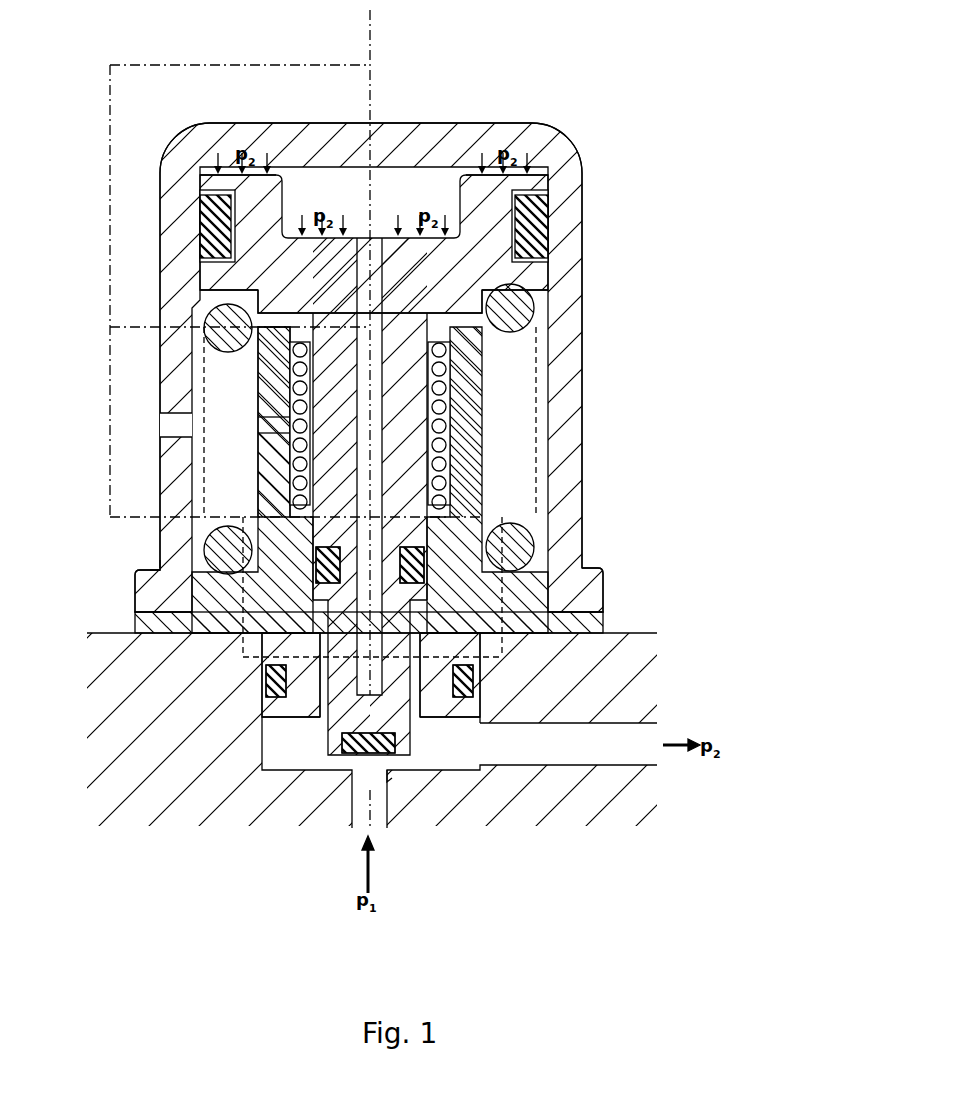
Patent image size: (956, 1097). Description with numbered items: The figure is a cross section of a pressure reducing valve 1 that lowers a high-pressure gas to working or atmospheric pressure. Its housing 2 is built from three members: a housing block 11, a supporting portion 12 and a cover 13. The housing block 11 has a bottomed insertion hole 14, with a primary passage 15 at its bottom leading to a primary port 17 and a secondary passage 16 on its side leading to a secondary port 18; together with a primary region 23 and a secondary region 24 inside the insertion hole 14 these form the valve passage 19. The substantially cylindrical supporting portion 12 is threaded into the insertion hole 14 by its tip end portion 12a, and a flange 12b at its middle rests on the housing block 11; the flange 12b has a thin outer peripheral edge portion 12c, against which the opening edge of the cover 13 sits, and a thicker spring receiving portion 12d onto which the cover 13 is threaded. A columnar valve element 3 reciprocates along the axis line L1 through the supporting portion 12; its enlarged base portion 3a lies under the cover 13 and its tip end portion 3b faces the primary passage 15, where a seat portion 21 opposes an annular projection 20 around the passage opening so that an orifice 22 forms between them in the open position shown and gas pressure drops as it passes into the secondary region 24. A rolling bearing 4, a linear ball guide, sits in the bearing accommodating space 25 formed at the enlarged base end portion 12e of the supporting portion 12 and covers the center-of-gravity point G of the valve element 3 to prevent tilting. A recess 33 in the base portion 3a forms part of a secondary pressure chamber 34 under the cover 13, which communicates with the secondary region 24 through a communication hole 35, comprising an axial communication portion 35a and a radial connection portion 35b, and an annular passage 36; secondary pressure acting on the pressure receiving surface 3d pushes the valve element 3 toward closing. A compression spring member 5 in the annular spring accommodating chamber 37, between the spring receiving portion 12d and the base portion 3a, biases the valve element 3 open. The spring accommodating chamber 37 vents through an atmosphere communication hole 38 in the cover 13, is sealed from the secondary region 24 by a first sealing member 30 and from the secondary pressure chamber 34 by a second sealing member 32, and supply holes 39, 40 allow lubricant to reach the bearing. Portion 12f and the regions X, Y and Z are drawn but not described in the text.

The pressure reducing valve 1 is at (594, 100).
The housing 2 is at (641, 486).
The valve element 3 is at (473, 708).
The base portion 3a is at (548, 180).
The tip end portion 3b is at (318, 762).
The pressure receiving surface 3d is at (218, 180).
The rolling bearing 4 is at (290, 466).
The spring member 5 is at (540, 322).
The housing block 11 is at (622, 650).
The supporting portion 12 is at (576, 592).
The tip end portion 12a is at (268, 700).
The flange 12b is at (142, 580).
The outer peripheral edge portion 12c is at (150, 616).
The spring receiving portion 12d is at (190, 610).
The base end portion 12e is at (462, 366).
The housing lower portion 12f is at (503, 650).
The cover 13 is at (575, 543).
The insertion hole 14 is at (268, 738).
The primary passage 15 is at (374, 812).
The secondary passage 16 is at (627, 753).
The primary port 17 is at (364, 838).
The secondary port 18 is at (657, 733).
The valve passage 19 is at (500, 787).
The annular projection 20 is at (381, 808).
The seat portion 21 is at (342, 740).
The orifice 22 is at (392, 772).
The primary region 23 is at (338, 797).
The secondary region 24 is at (454, 766).
The bearing accommodating space 25 is at (288, 380).
The first sealing member 30 is at (430, 568).
The second sealing member 32 is at (542, 228).
The recess 33 is at (404, 199).
The secondary pressure chamber 34 is at (357, 199).
The communication hole 35 is at (384, 383).
The communication portion 35a is at (386, 306).
The connection portion 35b is at (340, 660).
The annular passage 36 is at (320, 628).
The spring accommodating chamber 37 is at (522, 437).
The atmosphere communication hole 38 is at (172, 421).
The supply hole 39 is at (272, 422).
The supply hole 40 is at (270, 441).
The center-of-gravity point G is at (348, 438).
The axis line L1 is at (375, 35).
The region X is at (318, 422).
The region Y is at (372, 593).
The region Z is at (235, 291).